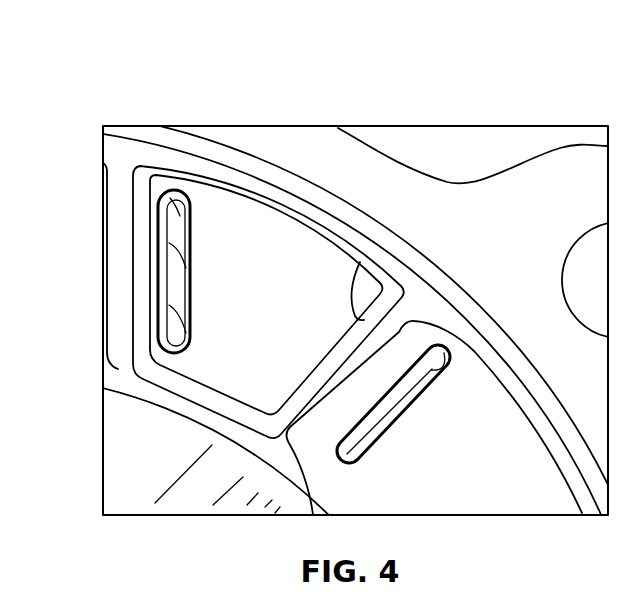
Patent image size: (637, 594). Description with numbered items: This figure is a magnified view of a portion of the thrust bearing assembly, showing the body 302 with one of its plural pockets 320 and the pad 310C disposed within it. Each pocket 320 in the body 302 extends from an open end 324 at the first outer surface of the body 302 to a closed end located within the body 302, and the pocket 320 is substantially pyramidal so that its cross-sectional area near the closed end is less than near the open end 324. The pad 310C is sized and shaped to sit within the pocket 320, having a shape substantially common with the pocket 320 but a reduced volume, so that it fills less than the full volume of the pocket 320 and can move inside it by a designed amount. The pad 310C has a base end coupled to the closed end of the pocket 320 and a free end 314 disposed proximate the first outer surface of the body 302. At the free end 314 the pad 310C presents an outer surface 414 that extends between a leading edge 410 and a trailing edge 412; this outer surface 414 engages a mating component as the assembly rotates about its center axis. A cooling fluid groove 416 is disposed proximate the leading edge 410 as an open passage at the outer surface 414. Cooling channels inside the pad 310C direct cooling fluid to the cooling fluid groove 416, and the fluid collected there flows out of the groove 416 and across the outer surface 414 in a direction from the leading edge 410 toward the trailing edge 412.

The body 302 is at (340, 135).
The pad 310C is at (240, 238).
The free end 314 is at (345, 280).
The pocket 320 is at (135, 167).
The open end 324 is at (140, 217).
The leading edge 410 is at (162, 190).
The trailing edge 412 is at (365, 265).
The outer surface 414 is at (215, 228).
The cooling fluid groove 416 is at (168, 284).